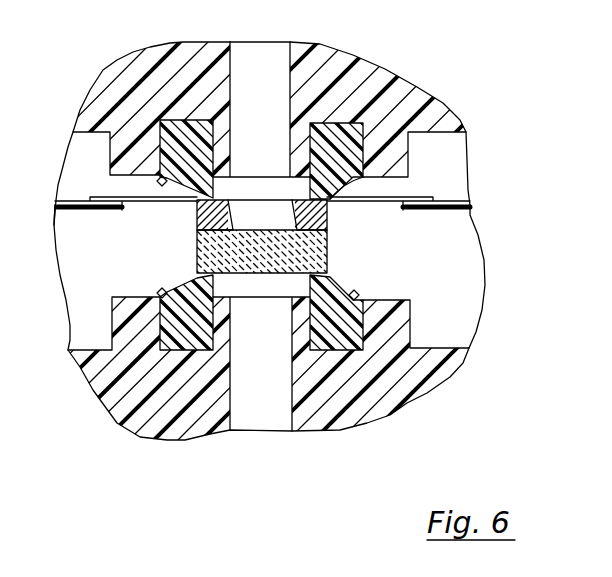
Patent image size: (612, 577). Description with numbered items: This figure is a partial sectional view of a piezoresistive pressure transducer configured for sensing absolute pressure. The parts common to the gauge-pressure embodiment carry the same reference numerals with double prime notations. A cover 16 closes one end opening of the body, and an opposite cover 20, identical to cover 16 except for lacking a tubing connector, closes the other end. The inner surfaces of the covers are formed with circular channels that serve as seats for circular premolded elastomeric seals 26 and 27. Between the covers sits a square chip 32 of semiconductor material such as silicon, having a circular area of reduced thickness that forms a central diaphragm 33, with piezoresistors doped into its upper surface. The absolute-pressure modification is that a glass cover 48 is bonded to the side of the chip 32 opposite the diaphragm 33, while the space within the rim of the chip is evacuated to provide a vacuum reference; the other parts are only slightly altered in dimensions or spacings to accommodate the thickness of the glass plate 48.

The cover 16 is at (390, 71).
The cover 20 is at (393, 410).
The elastomeric seal 26 is at (380, 203).
The elastomeric seal 27 is at (333, 292).
The chip 32 is at (196, 216).
The diaphragm 33 is at (327, 220).
The glass cover 48 is at (330, 255).